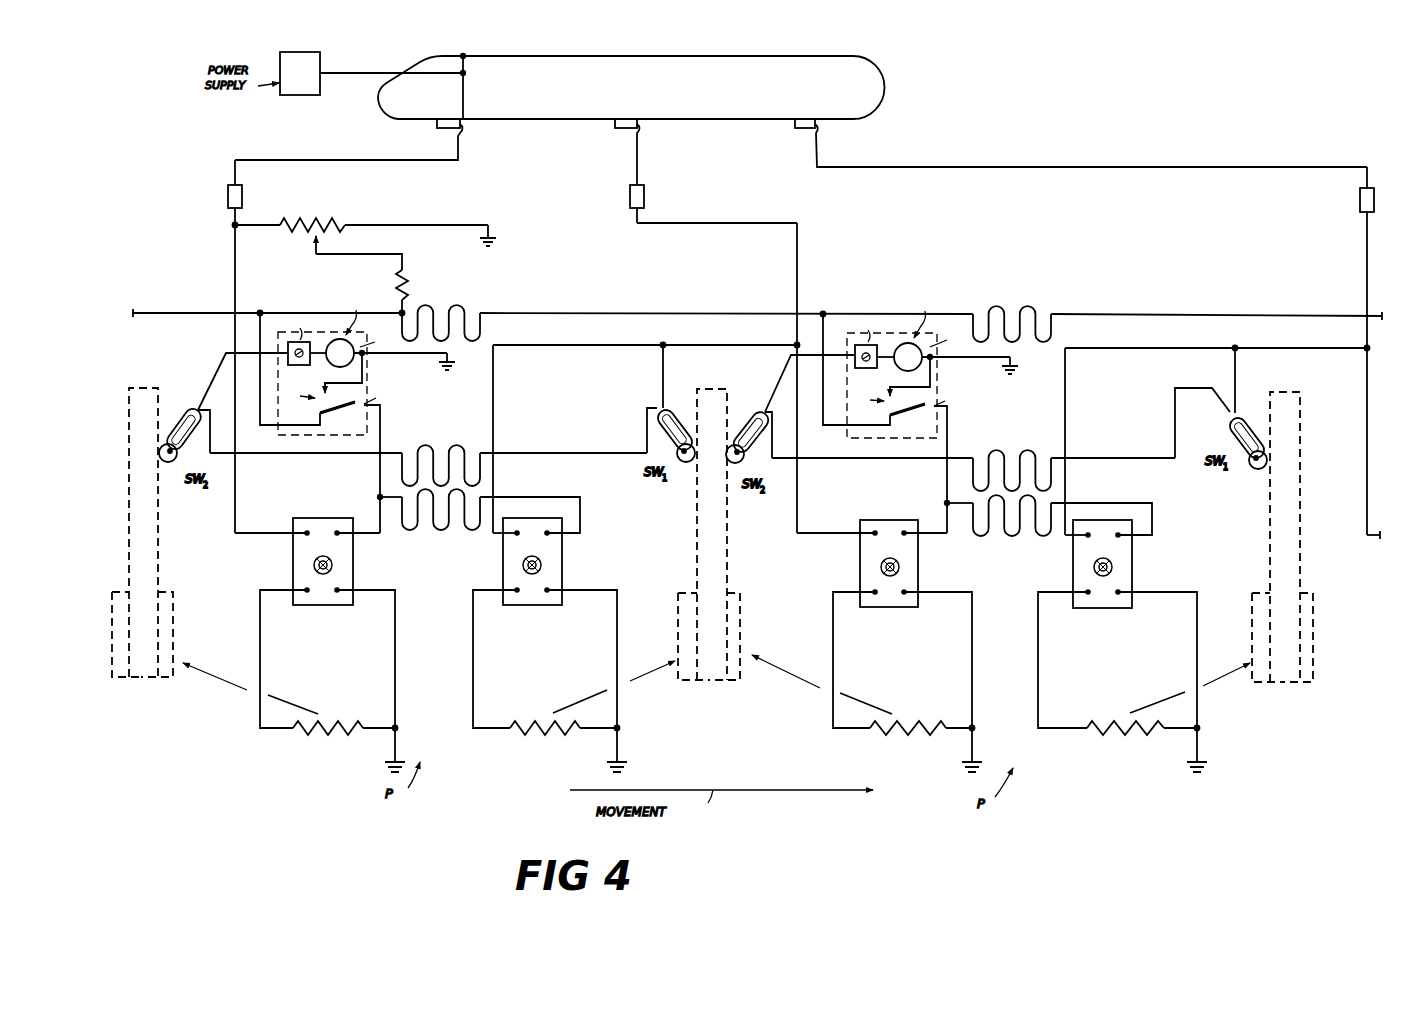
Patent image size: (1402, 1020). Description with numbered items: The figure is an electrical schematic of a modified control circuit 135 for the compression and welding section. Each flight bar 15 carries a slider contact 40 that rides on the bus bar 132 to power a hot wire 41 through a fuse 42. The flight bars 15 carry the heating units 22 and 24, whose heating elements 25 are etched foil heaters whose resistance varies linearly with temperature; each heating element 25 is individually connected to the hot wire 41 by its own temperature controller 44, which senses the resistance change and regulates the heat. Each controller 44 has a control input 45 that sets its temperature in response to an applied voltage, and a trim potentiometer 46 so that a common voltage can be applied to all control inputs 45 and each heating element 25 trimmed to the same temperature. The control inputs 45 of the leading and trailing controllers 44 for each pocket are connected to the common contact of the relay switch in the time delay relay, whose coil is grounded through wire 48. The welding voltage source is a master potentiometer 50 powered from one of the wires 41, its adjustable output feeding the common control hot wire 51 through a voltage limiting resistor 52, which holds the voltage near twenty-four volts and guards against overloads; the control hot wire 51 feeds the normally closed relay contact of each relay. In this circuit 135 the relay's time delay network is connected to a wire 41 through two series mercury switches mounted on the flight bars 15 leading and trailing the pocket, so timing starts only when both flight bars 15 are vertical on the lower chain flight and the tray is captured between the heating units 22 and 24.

The bus bar 132 is at (612, 49).
The slider contact 40 is at (445, 130).
The fuse 42 is at (242, 197).
The hot wire 41 is at (232, 265).
The master potentiometer 50 is at (318, 223).
The voltage limiting resistor 52 is at (406, 287).
The common control hot wire 51 is at (598, 313).
The wire 48 is at (367, 375).
The flight bar 15 is at (132, 393).
The heating unit 24 is at (116, 593).
The heating unit 22 is at (171, 597).
The control input 45 is at (338, 530).
The trim potentiometer 46 is at (313, 565).
The temperature controller 44 is at (352, 576).
The heating element 25 is at (1130, 738).
The control circuit 135 is at (1187, 150).